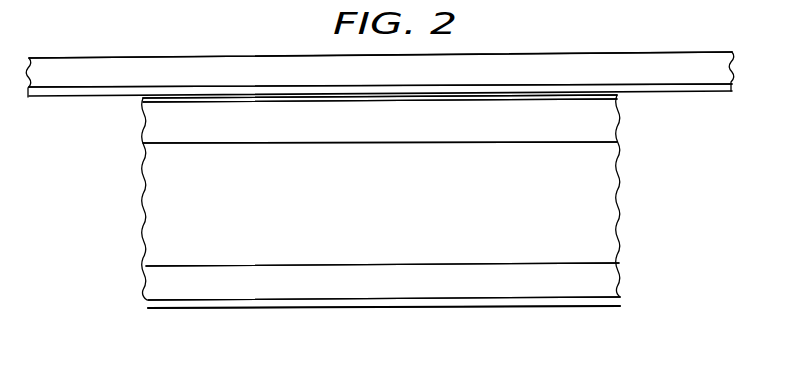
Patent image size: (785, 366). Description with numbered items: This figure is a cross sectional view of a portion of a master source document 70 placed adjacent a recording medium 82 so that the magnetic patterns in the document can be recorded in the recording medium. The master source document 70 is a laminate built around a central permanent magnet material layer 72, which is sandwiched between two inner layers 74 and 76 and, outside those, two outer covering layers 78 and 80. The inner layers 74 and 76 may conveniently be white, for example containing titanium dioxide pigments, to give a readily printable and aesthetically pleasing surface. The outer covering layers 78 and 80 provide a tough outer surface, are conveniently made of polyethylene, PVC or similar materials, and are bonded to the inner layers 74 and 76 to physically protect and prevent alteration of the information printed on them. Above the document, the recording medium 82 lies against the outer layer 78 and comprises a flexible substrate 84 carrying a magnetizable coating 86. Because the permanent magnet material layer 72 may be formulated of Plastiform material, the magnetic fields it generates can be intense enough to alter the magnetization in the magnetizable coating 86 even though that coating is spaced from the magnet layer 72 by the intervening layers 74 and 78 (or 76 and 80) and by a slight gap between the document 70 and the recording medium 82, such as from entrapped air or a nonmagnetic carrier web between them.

The master source document 70 is at (127, 188).
The permanent magnet material layer 72 is at (385, 217).
The inner layer 74 is at (413, 136).
The inner layer 76 is at (381, 293).
The outer covering layer 78 is at (265, 98).
The outer covering layer 80 is at (463, 302).
The recording medium 82 is at (175, 48).
The flexible substrate 84 is at (608, 62).
The magnetizable coating 86 is at (640, 87).